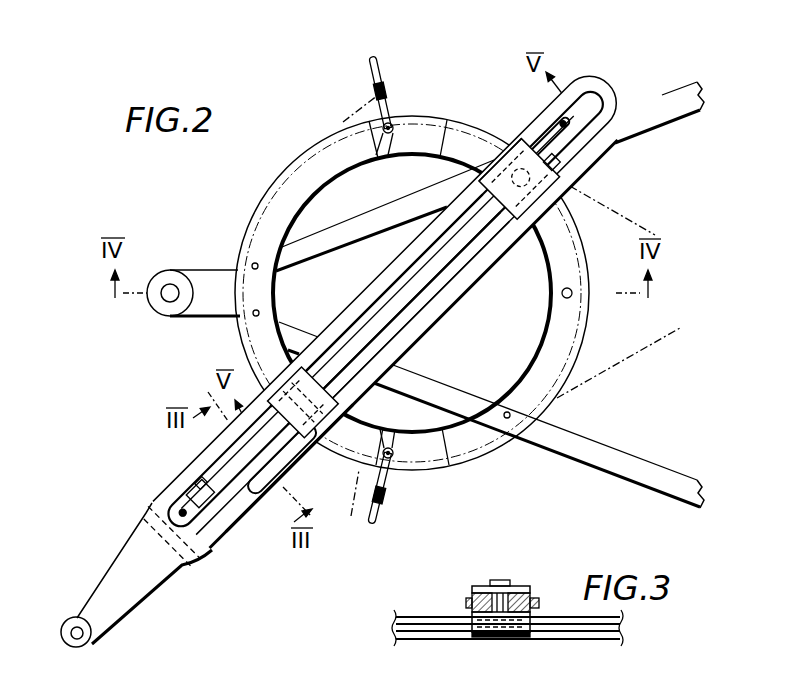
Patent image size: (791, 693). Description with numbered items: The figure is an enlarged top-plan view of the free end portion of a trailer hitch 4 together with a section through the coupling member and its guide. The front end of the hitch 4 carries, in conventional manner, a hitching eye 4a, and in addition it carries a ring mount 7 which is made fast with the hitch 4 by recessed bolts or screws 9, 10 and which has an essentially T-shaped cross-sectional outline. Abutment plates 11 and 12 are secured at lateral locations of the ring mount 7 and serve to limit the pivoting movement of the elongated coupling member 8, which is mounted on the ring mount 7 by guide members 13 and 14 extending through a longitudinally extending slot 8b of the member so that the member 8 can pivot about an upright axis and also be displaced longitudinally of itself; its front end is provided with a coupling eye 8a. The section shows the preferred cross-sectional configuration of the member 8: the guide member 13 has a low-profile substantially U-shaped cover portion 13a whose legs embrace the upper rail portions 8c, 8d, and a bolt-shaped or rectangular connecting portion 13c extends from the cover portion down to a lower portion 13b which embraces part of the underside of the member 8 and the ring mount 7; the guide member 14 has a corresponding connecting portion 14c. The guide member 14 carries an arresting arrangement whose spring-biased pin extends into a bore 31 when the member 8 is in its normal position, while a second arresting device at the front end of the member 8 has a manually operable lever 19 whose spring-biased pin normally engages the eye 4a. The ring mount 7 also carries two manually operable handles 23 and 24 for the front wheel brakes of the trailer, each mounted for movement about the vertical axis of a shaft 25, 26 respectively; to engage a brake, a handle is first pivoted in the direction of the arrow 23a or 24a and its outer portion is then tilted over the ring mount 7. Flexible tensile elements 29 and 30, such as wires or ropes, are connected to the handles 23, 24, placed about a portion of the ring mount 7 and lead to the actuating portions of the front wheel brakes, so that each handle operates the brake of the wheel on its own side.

In FIG. 2, the hitch 4 is at (583, 458).
In FIG. 2, the hitching eye 4a is at (170, 308).
In FIG. 2, the ring mount 7 is at (577, 338).
In FIG. 3, the ring mount 7 is at (572, 633).
In FIG. 2, the coupling member 8 is at (216, 554).
In FIG. 3, the coupling member 8 is at (539, 600).
In FIG. 2, the coupling eye 8a is at (80, 634).
In FIG. 2, the longitudinally extending slot 8b is at (442, 265).
In FIG. 2, the upper rail portion 8c is at (423, 300).
In FIG. 2, the upper rail portion 8d is at (388, 297).
In FIG. 2, the recessed bolt 9 is at (507, 420).
In FIG. 2, the recessed bolt 10 is at (254, 264).
In FIG. 2, the abutment plate 11 is at (437, 455).
In FIG. 2, the abutment plate 12 is at (424, 128).
In FIG. 2, the guide member 13 is at (340, 400).
In FIG. 3, the guide member 13 is at (518, 578).
In FIG. 3, the cover portion 13a is at (478, 587).
In FIG. 3, the lower portion 13b is at (495, 640).
In FIG. 2, the connecting portion 13c is at (278, 468).
In FIG. 2, the guide member 14 is at (510, 218).
In FIG. 2, the connecting portion 14c is at (445, 196).
In FIG. 2, the manually operable lever 19 is at (217, 475).
In FIG. 2, the manually operable handle 23 is at (377, 522).
In FIG. 2, the arrow 23a is at (392, 503).
In FIG. 2, the manually operable handle 24 is at (375, 62).
In FIG. 2, the arrow 24a is at (392, 80).
In FIG. 2, the shaft 25 is at (391, 448).
In FIG. 2, the shaft 26 is at (383, 153).
In FIG. 2, the flexible tensile element 29 is at (604, 204).
In FIG. 2, the flexible tensile element 30 is at (358, 116).
In FIG. 2, the bore 31 is at (573, 290).